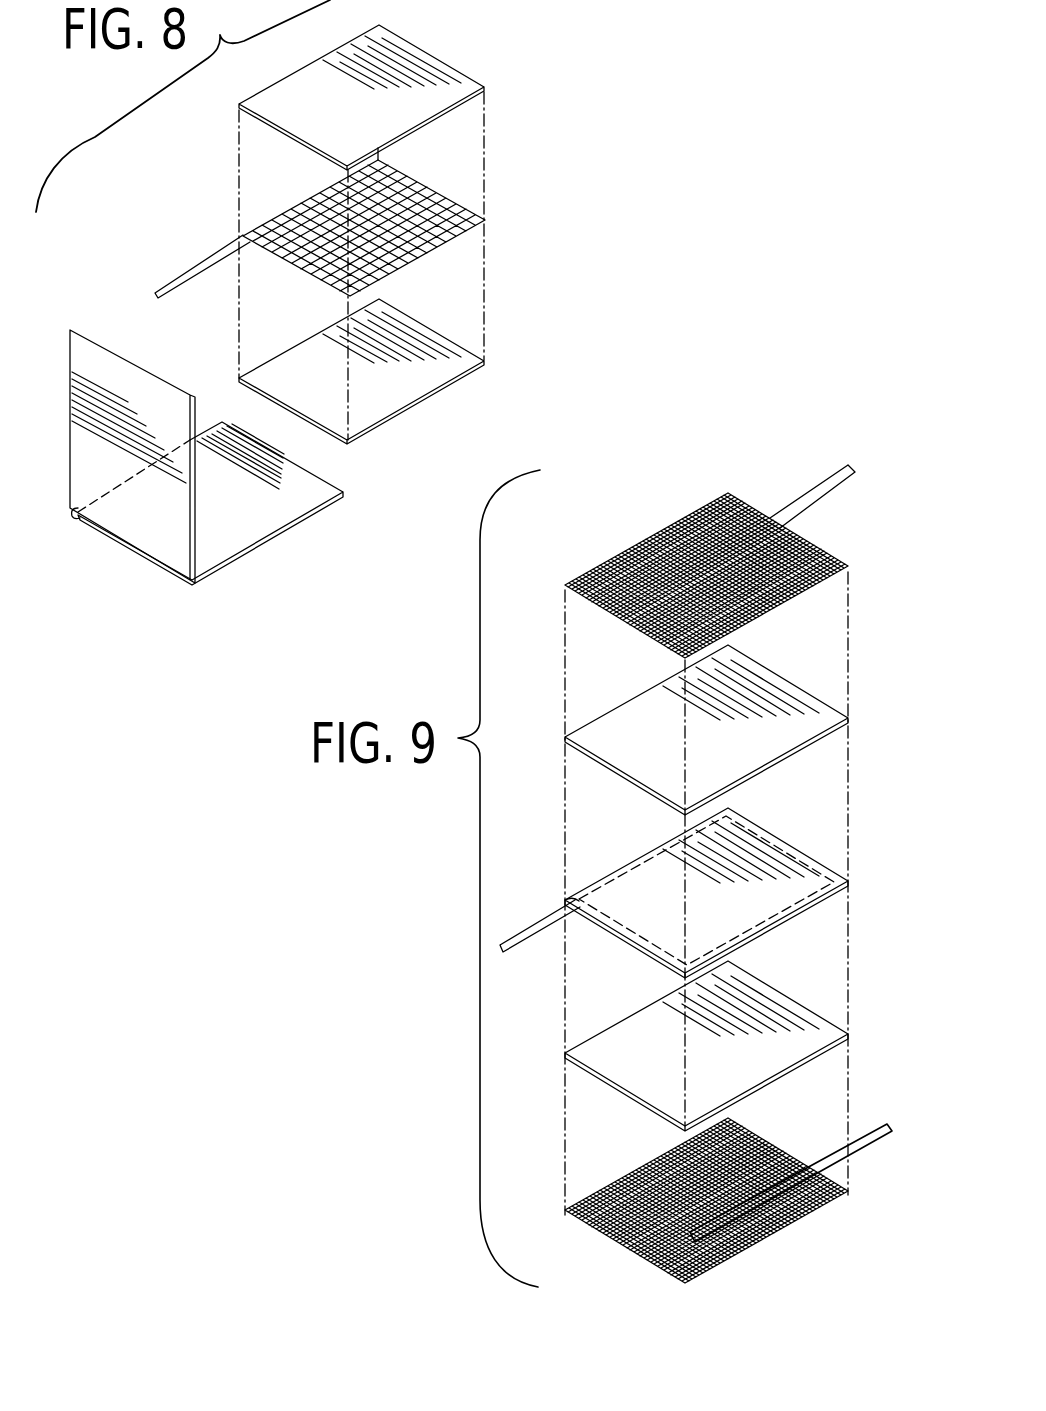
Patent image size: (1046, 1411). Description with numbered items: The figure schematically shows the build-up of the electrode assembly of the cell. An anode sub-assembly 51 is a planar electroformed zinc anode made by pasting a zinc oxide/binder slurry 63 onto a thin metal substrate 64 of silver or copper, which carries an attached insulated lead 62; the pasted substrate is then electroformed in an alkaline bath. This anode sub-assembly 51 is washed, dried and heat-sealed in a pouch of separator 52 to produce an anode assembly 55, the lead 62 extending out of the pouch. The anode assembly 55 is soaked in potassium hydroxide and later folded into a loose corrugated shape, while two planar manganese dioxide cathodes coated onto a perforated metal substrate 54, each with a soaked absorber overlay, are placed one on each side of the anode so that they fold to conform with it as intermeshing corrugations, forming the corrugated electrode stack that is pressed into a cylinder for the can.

In FIG. 8, the anode sub-assembly 51 is at (498, 362).
In FIG. 8, the separator 52 is at (133, 556).
In FIG. 9, the perforated metal substrate 54 is at (825, 585).
In FIG. 9, the anode assembly 55 is at (812, 855).
In FIG. 8, the insulated lead 62 is at (198, 272).
In FIG. 9, the insulated lead 62 is at (536, 930).
In FIG. 8, the zinc oxide/binder slurry 63 is at (312, 76).
In FIG. 8, the thin metal substrate 64 is at (443, 243).